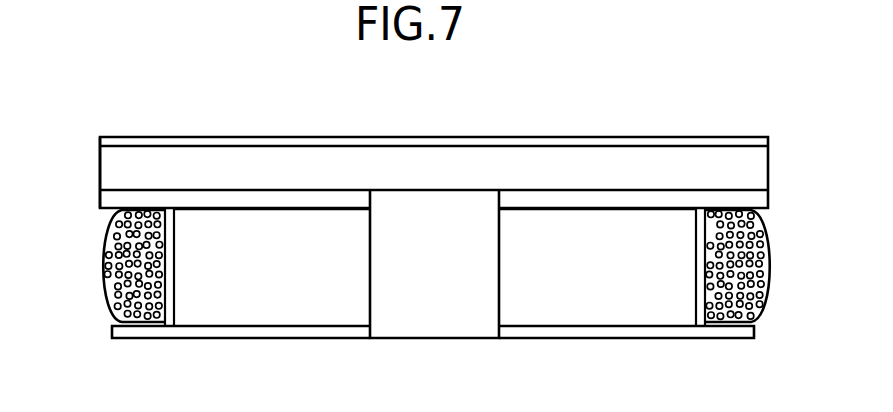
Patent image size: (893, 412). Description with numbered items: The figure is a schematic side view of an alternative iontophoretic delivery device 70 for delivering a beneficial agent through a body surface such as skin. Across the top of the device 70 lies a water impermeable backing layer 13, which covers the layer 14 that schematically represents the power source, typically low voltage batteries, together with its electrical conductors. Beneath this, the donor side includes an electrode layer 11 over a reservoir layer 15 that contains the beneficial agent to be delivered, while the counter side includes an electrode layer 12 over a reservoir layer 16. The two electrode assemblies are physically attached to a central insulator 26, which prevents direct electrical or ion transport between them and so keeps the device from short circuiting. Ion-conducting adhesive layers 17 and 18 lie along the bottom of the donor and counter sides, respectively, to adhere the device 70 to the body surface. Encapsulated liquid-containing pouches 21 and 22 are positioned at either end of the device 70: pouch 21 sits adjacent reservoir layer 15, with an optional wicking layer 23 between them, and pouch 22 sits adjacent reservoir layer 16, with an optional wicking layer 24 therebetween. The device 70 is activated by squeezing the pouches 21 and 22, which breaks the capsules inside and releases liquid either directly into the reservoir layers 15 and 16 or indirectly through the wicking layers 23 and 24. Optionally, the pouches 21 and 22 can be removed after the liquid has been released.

The iontophoretic delivery device 70 is at (251, 126).
The water impermeable backing layer 13 is at (692, 137).
The layer 14 is at (768, 167).
The electrode layer 12 is at (768, 204).
The electrode layer 11 is at (103, 200).
The pouch 21 is at (115, 268).
The pouch 22 is at (770, 266).
The wicking layer 23 is at (170, 290).
The wicking layer 24 is at (700, 298).
The reservoir layer 15 is at (306, 318).
The reservoir layer 16 is at (563, 318).
The ion-conducting adhesive layer 17 is at (237, 328).
The ion-conducting adhesive layer 18 is at (624, 327).
The insulator 26 is at (449, 303).